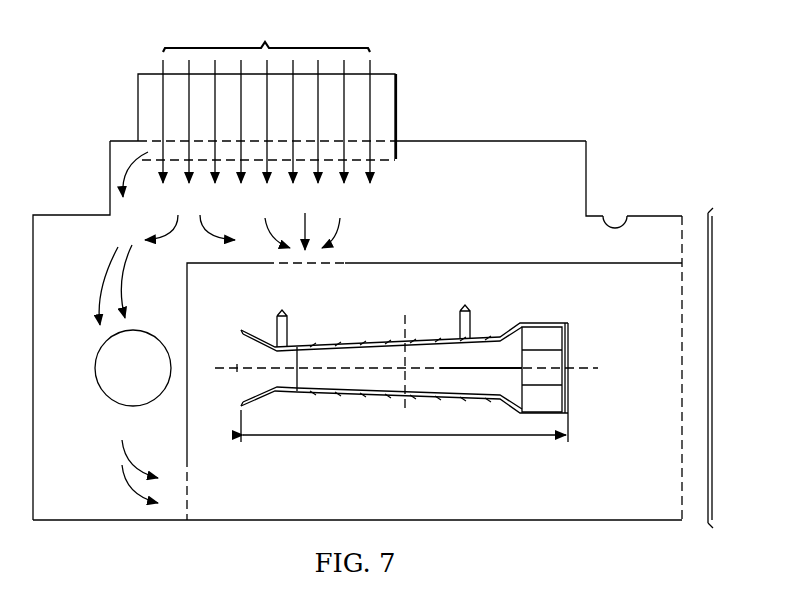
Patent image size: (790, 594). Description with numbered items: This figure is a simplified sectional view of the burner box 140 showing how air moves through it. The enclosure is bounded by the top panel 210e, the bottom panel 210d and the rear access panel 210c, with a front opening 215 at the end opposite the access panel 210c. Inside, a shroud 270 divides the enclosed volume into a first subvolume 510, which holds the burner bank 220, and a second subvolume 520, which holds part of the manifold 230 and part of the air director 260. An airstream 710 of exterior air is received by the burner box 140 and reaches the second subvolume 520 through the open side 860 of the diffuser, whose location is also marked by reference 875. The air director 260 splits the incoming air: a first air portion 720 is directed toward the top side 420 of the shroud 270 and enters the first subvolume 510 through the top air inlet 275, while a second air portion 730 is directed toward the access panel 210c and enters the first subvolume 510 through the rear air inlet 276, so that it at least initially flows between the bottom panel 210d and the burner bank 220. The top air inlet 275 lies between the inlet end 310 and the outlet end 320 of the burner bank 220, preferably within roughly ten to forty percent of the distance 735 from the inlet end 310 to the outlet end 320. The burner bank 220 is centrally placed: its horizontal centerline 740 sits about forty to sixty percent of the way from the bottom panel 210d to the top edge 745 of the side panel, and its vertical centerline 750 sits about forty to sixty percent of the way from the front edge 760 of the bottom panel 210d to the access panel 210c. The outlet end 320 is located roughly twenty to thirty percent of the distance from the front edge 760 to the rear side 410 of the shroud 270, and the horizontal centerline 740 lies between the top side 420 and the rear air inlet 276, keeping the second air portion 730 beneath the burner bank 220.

The burner box 140 is at (660, 215).
The access panel 210c is at (38, 419).
The bottom panel 210d is at (512, 518).
The top panel 210e is at (505, 141).
The front opening 215 is at (716, 368).
The burner bank 220 is at (571, 391).
The manifold 230 is at (133, 368).
The air director 260 is at (138, 95).
The shroud 270 is at (523, 263).
The top air inlet 275 is at (315, 267).
The rear air inlet 276 is at (191, 491).
The inlet end 310 is at (243, 438).
The outlet end 320 is at (570, 438).
The rear side 410 is at (186, 437).
The top side 420 is at (586, 267).
The first subvolume 510 is at (355, 488).
The second subvolume 520 is at (487, 177).
The airstream 710 is at (266, 100).
The first air portion 720 is at (348, 236).
The second air portion 730 is at (93, 262).
The distance 735 is at (415, 437).
The horizontal centerline 740 is at (598, 368).
The top edge 745 is at (612, 206).
The vertical centerline 750 is at (406, 318).
The front edge 760 is at (684, 495).
The open side 860 is at (125, 152).
The heater outlet region 875 is at (387, 165).